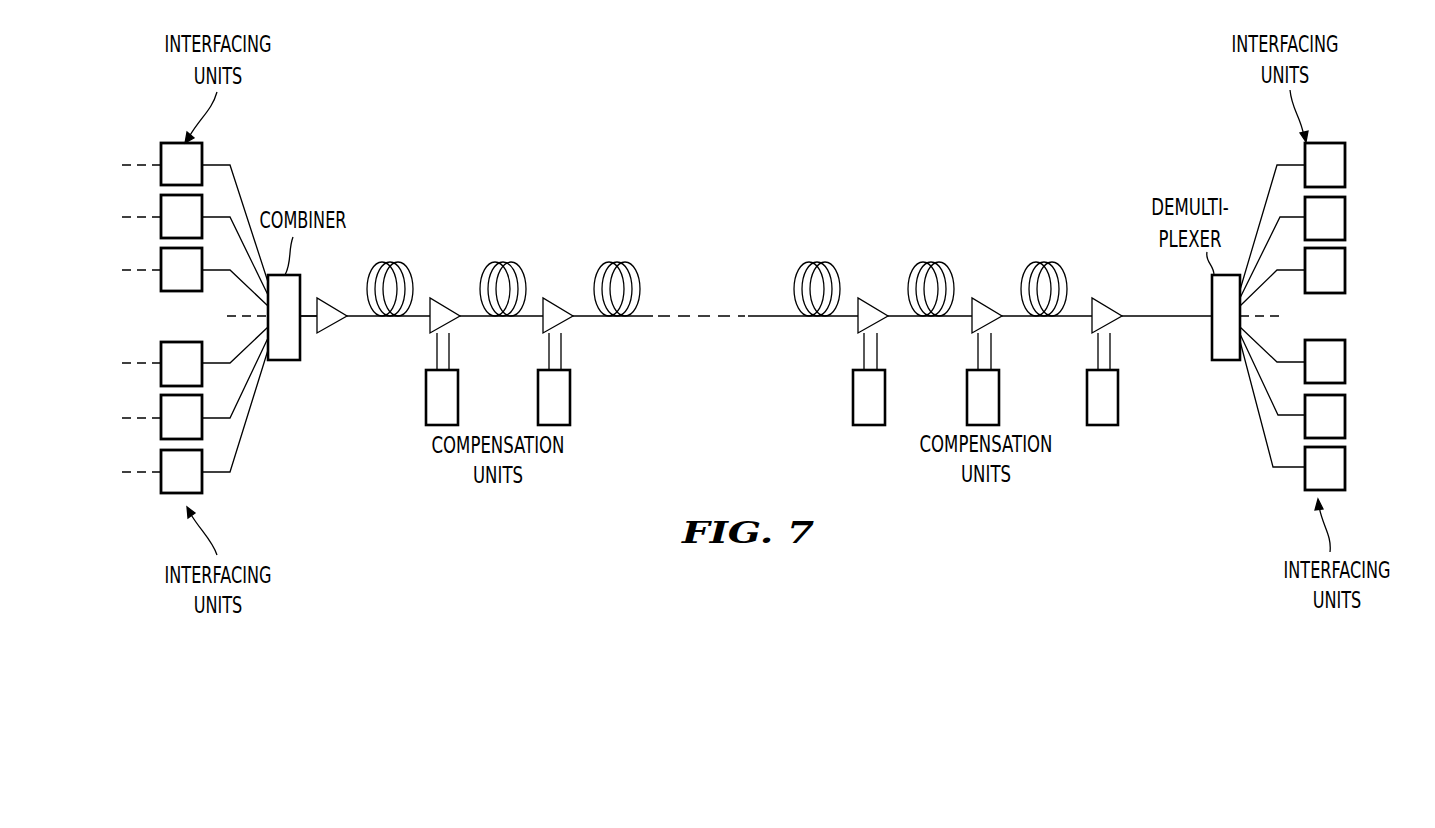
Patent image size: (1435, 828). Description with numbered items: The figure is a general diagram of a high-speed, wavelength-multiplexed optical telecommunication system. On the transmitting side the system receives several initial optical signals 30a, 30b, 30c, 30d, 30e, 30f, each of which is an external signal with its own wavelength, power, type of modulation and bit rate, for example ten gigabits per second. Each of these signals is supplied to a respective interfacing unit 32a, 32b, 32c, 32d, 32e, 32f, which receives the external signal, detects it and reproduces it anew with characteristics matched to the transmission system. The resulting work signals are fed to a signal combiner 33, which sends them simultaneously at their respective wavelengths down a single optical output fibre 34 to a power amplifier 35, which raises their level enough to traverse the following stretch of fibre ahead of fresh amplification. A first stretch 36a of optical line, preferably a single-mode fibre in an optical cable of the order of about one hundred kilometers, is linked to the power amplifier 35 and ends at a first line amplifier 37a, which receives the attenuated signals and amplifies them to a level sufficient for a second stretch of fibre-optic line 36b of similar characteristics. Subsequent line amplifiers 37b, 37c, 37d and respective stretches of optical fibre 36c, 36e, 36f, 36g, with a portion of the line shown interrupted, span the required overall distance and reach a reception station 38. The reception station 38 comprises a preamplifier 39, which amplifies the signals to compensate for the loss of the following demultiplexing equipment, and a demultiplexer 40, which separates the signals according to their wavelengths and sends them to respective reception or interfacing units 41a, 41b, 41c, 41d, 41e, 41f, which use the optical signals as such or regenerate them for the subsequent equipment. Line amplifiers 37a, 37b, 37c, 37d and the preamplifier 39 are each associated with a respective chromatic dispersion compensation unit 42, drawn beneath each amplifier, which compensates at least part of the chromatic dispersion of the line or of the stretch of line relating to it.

The initial optical signal 30a is at (146, 165).
The initial optical signal 30b is at (146, 217).
The initial optical signal 30c is at (146, 270).
The initial optical signal 30d is at (146, 363).
The initial optical signal 30e is at (146, 418).
The initial optical signal 30f is at (146, 472).
The interfacing unit 32a is at (214, 212).
The interfacing unit 32b is at (214, 245).
The interfacing unit 32c is at (214, 277).
The interfacing unit 32d is at (214, 356).
The interfacing unit 32e is at (214, 388).
The interfacing unit 32f is at (214, 421).
The signal combiner 33 is at (285, 361).
The optical output fibre 34 is at (310, 318).
The power amplifier 35 is at (331, 298).
The first stretch of optical line 36a is at (392, 262).
The second stretch of fibre-optic line 36b is at (505, 262).
The stretch of optical fibre 36c is at (618, 262).
The stretch of optical fibre 36e is at (819, 262).
The stretch of optical fibre 36f is at (932, 262).
The stretch of optical fibre 36g is at (1045, 262).
The first line amplifier 37a is at (441, 298).
The line amplifier 37b is at (554, 298).
The line amplifier 37c is at (869, 298).
The line amplifier 37d is at (983, 298).
The reception station 38 is at (1155, 156).
The preamplifier 39 is at (1101, 298).
The demultiplexer 40 is at (1212, 335).
The reception or interfacing unit 41a is at (1345, 165).
The reception or interfacing unit 41b is at (1345, 217).
The reception or interfacing unit 41c is at (1345, 270).
The reception or interfacing unit 41d is at (1345, 362).
The reception or interfacing unit 41e is at (1345, 415).
The reception or interfacing unit 41f is at (1345, 467).
The chromatic dispersion compensation unit 42 is at (426, 394).